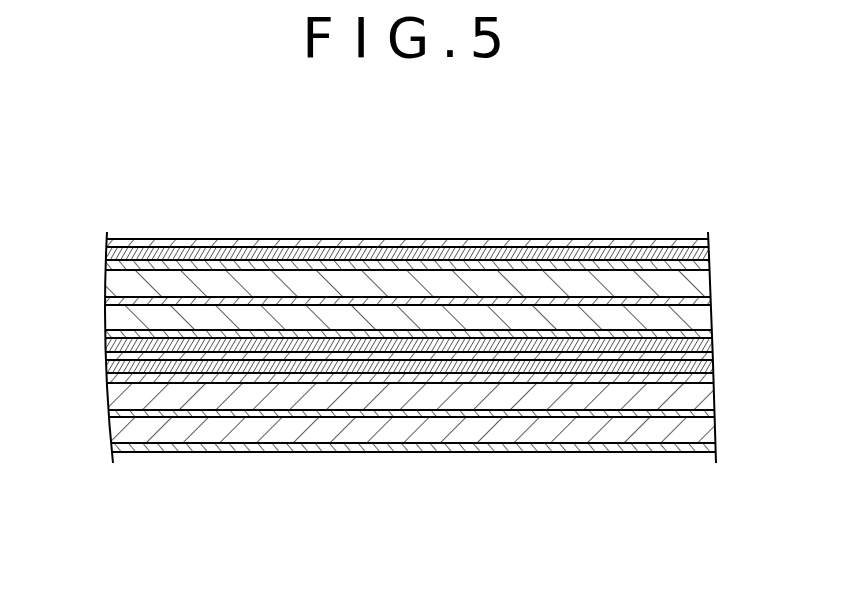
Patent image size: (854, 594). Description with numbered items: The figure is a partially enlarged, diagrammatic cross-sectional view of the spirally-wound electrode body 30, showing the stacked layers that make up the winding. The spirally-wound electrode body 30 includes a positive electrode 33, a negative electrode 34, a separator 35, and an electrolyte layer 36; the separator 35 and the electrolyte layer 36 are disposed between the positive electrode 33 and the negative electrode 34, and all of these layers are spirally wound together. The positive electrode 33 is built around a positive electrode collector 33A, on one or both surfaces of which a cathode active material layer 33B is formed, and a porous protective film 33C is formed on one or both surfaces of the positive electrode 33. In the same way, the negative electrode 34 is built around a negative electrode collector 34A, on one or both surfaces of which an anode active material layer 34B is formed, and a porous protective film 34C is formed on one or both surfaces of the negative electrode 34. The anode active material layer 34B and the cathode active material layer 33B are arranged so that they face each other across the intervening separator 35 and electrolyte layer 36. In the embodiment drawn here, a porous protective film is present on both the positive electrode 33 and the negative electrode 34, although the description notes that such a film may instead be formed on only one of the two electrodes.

The spirally-wound electrode body 30 is at (416, 490).
The positive electrode 33 is at (345, 174).
The positive electrode collector 33A is at (135, 299).
The cathode active material layer 33B is at (213, 317).
The porous protective film 33C is at (295, 333).
The negative electrode 34 is at (365, 174).
The negative electrode collector 34A is at (388, 412).
The anode active material layer 34B is at (468, 432).
The porous protective film 34C is at (563, 445).
The separator 35 is at (637, 357).
The electrolyte layer 36 is at (653, 352).